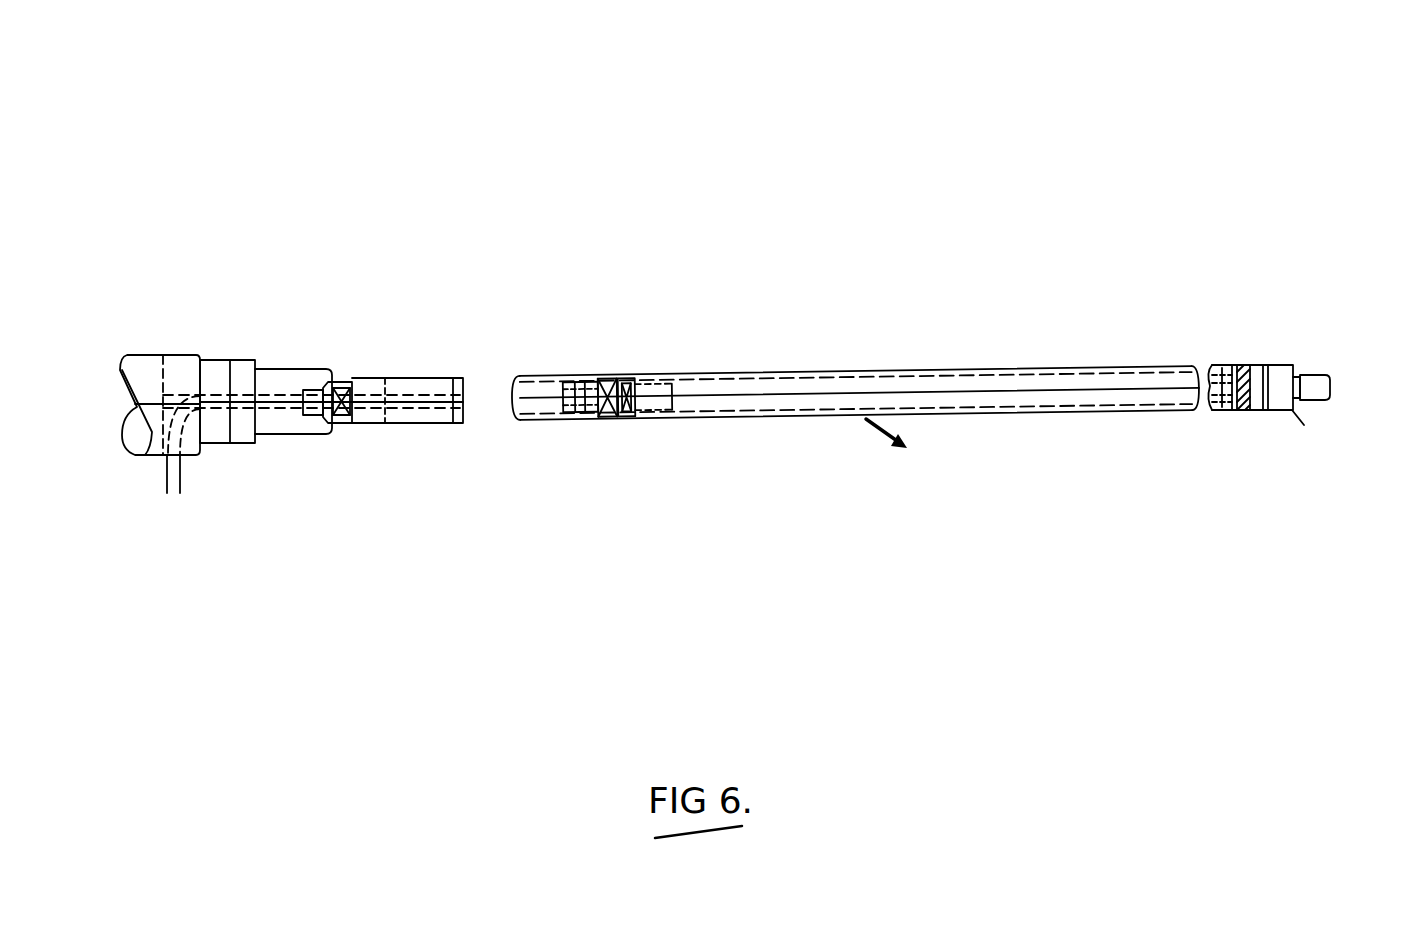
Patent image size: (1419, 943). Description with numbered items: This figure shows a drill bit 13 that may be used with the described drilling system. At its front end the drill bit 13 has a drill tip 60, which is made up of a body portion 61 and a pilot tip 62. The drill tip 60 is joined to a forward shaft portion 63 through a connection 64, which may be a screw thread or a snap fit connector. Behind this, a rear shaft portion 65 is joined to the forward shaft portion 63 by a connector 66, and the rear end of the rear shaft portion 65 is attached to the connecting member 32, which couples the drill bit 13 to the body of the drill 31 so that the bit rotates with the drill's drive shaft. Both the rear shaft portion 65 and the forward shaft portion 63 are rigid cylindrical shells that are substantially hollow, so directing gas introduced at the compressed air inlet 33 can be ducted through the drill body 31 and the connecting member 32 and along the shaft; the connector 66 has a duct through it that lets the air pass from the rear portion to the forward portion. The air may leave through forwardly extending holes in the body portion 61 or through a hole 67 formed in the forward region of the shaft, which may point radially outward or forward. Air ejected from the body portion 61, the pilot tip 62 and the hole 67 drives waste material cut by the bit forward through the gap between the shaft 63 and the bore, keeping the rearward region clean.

The drill bit 13 is at (853, 128).
The body of the drill 31 is at (167, 350).
The connecting member 32 is at (352, 306).
The compressed air inlet 33 is at (174, 545).
The drill tip 60 is at (1276, 300).
The body portion 61 is at (1272, 413).
The pilot tip 62 is at (1325, 375).
The forward shaft portion 63 is at (856, 407).
The connection 64 is at (1240, 365).
The rear shaft portion 65 is at (527, 377).
The connector 66 is at (610, 421).
The hole 67 is at (858, 428).